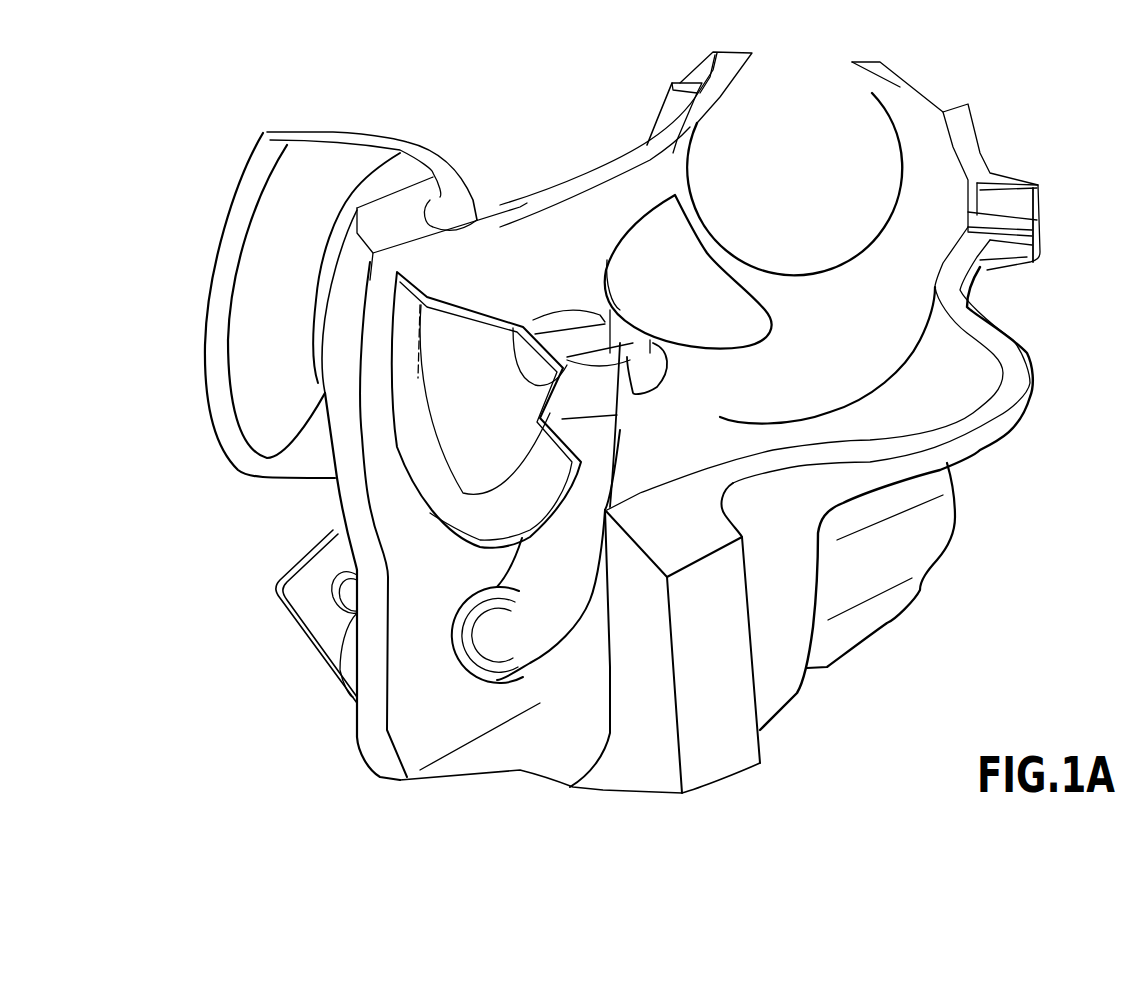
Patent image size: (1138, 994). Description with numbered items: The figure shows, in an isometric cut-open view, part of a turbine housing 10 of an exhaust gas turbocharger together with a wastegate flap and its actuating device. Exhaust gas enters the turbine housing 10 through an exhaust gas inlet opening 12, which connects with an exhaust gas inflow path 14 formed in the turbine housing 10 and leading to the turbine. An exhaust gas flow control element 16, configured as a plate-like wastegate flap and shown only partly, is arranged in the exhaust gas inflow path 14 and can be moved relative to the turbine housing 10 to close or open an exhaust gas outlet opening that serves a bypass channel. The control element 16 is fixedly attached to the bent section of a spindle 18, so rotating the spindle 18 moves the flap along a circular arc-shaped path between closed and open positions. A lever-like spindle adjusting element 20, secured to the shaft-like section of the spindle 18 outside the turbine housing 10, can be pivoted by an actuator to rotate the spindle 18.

The turbine housing 10 is at (574, 143).
The exhaust gas inlet opening 12 is at (827, 138).
The exhaust gas inflow path 14 is at (770, 380).
The exhaust gas flow control element 16 is at (450, 403).
The spindle 18 is at (527, 620).
The spindle adjusting element 20 is at (313, 600).